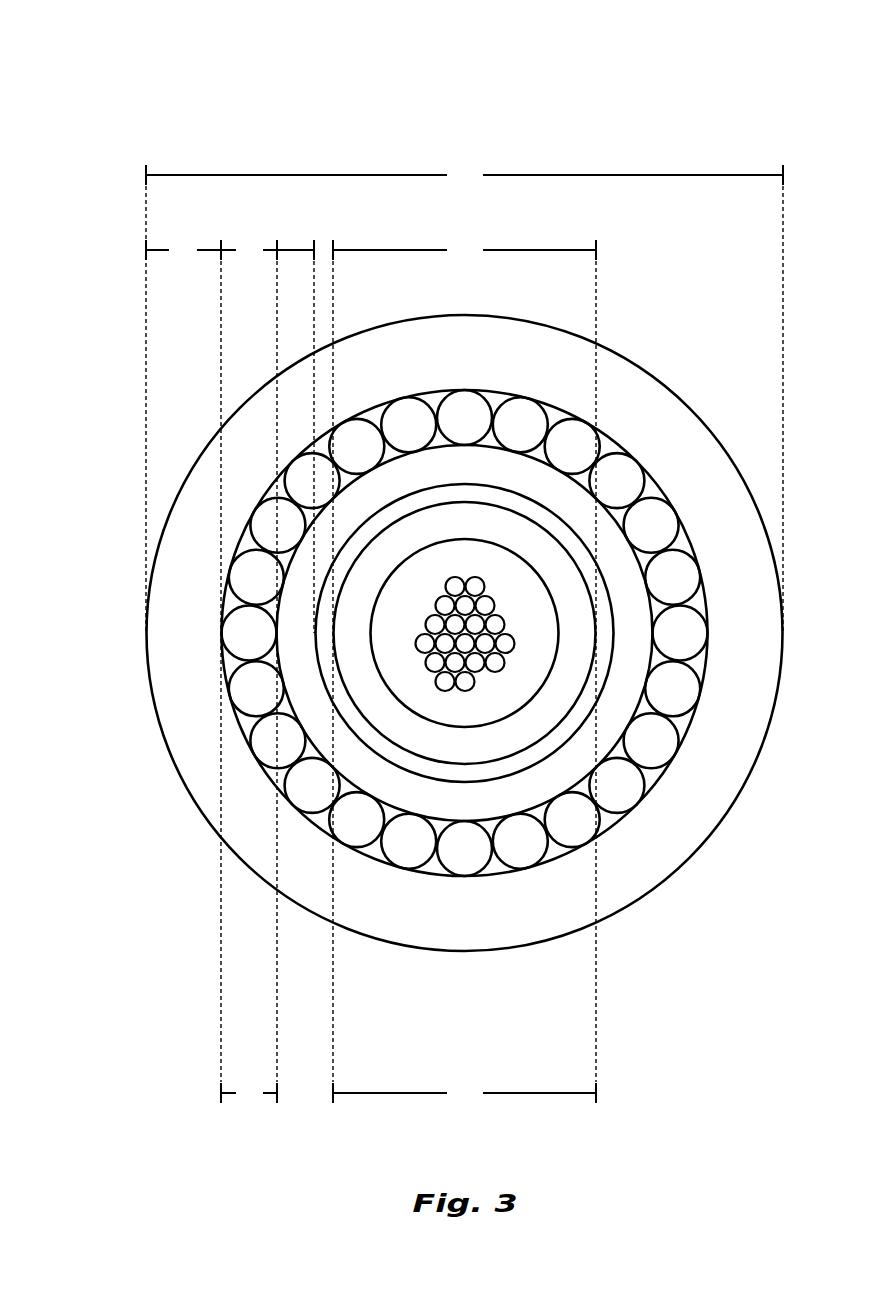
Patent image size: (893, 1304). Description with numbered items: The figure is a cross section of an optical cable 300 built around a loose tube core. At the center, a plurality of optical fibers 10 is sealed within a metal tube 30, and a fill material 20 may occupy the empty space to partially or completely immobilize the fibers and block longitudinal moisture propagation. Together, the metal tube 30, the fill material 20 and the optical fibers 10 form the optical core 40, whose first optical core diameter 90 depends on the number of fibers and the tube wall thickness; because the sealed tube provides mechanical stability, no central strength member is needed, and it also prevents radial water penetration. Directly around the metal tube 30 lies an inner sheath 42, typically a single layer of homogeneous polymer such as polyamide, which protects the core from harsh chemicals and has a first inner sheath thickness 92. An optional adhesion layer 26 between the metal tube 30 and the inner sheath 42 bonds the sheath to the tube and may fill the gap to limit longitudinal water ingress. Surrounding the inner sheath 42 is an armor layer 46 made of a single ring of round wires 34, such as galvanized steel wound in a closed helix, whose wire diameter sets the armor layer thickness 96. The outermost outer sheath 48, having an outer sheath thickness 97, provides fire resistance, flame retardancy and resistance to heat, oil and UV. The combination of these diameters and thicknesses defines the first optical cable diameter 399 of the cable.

The optical cable 300 is at (124, 69).
The first optical cable diameter 399 is at (464, 397).
The outer sheath thickness 97 is at (183, 251).
The armor layer thickness 96 is at (249, 659).
The first inner sheath thickness 92 is at (298, 249).
The first optical core diameter 90 is at (464, 659).
The round wires 34 is at (465, 633).
The adhesion layer 26 is at (525, 510).
The optical fibers 10 is at (492, 589).
The fill material 20 is at (465, 633).
The metal tube 30 is at (465, 633).
The inner sheath 42 is at (465, 633).
The outer sheath 48 is at (465, 633).
The armor layer 46 is at (249, 1094).
The optical core 40 is at (464, 1094).